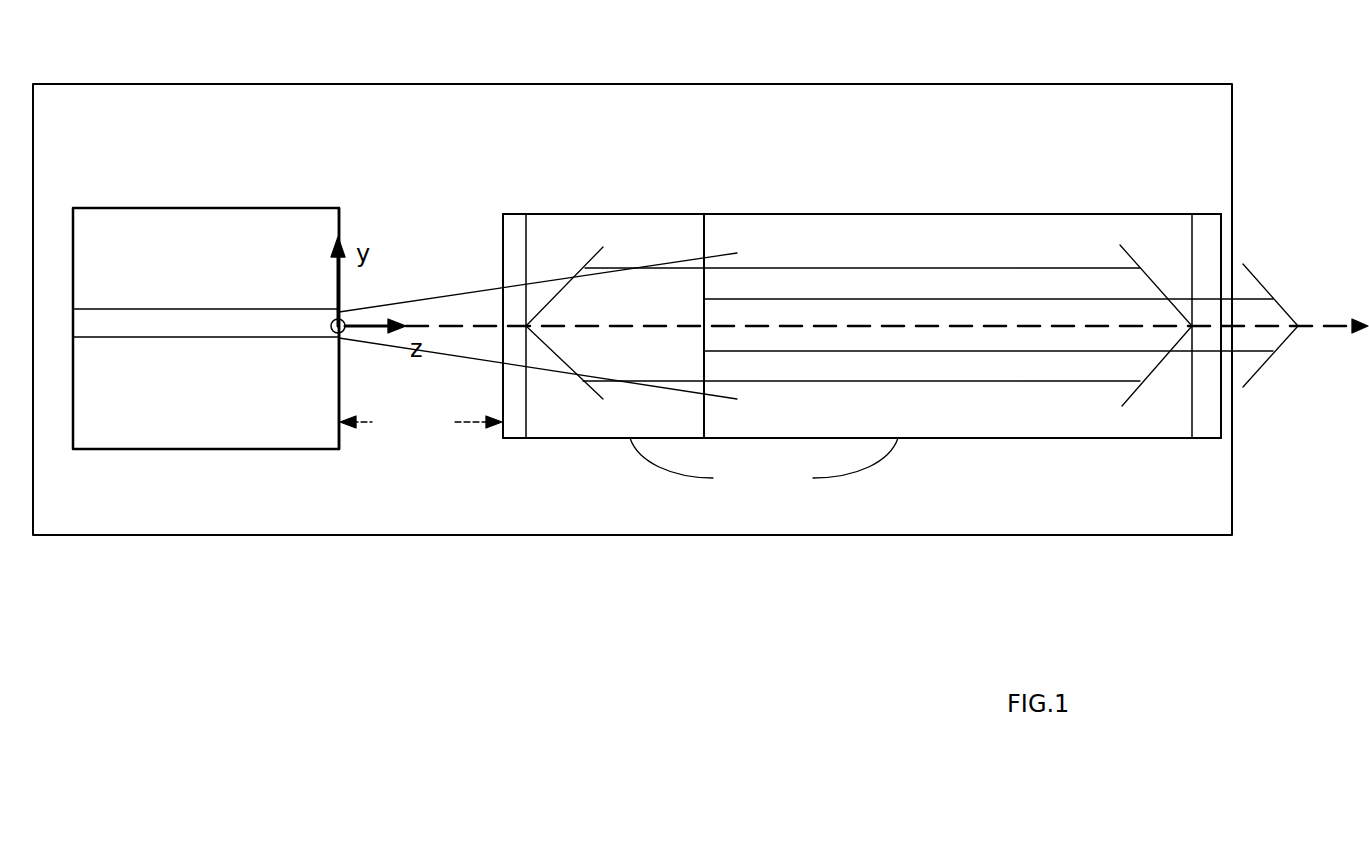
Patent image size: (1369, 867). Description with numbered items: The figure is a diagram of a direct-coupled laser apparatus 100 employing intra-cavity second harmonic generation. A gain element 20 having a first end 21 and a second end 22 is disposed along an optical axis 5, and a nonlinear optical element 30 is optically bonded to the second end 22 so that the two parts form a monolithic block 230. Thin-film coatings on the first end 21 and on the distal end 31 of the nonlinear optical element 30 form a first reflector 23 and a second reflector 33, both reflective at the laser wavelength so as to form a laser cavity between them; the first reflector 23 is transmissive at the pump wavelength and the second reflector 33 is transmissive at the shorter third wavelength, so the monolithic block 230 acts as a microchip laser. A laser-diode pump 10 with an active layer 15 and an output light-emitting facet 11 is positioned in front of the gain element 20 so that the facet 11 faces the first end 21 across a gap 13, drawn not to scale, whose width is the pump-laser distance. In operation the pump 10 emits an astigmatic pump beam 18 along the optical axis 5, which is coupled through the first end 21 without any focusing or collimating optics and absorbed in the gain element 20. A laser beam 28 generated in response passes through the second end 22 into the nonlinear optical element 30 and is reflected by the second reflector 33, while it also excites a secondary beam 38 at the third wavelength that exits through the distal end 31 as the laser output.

The direct-coupled laser apparatus 100 is at (1020, 84).
The laser-diode pump 10 is at (153, 208).
The output light-emitting facet 11 is at (344, 220).
The active layer 15 is at (177, 337).
The gap 13 is at (421, 422).
The pump beam 18 is at (475, 297).
The gain element 20 is at (648, 214).
The first end 21 is at (494, 233).
The first reflector 23 is at (512, 214).
The second end 22 is at (705, 248).
The nonlinear optical element 30 is at (875, 214).
The laser beam 28 is at (815, 268).
The secondary beam 38 is at (1030, 350).
The second reflector 33 is at (1207, 214).
The distal end 31 is at (1232, 237).
The optical axis 5 is at (1342, 326).
The monolithic block 230 is at (764, 466).